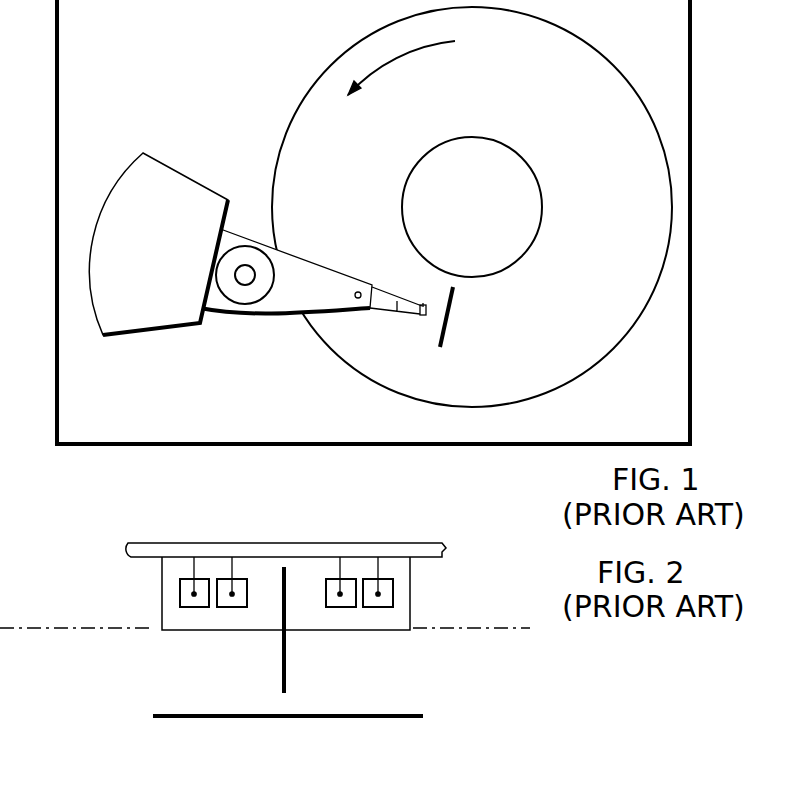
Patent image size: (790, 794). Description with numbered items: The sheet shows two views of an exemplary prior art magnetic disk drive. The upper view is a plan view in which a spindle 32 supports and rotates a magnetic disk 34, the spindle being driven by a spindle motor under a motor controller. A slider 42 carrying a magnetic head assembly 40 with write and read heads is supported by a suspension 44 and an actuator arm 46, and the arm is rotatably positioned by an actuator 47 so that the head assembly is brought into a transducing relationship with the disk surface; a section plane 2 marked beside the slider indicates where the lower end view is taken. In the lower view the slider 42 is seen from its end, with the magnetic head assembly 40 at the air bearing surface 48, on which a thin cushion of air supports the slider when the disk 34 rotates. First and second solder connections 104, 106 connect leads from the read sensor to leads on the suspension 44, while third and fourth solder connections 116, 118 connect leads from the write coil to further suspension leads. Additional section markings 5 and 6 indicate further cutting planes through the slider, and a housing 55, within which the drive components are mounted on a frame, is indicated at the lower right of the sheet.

In FIG. 1, the plane 2— 2 is at (470, 301).
In FIG. 1, the spindle 32 is at (498, 140).
In FIG. 1, the magnetic disk 34 is at (600, 206).
In FIG. 1, the magnetic head assembly 40 is at (425, 316).
In FIG. 2, the magnetic head assembly 40 is at (297, 588).
In FIG. 1, the slider 42 is at (426, 302).
In FIG. 2, the slider 42 is at (162, 588).
In FIG. 1, the suspension 44 is at (382, 312).
In FIG. 1, the actuator arm 46 is at (290, 250).
In FIG. 1, the actuator 47 is at (182, 168).
In FIG. 2, the air bearing surface 48 is at (47, 630).
In FIG. 2, the first solder connection 104 is at (175, 580).
In FIG. 2, the second solder connection 106 is at (360, 582).
In FIG. 2, the third solder connection 116 is at (213, 580).
In FIG. 2, the fourth solder connection 118 is at (322, 582).
In FIG. 2, the section line 5- 5 is at (180, 730).
In FIG. 2, the section line 6- 6 is at (300, 583).
In FIG. 2, the housing 55 is at (593, 793).